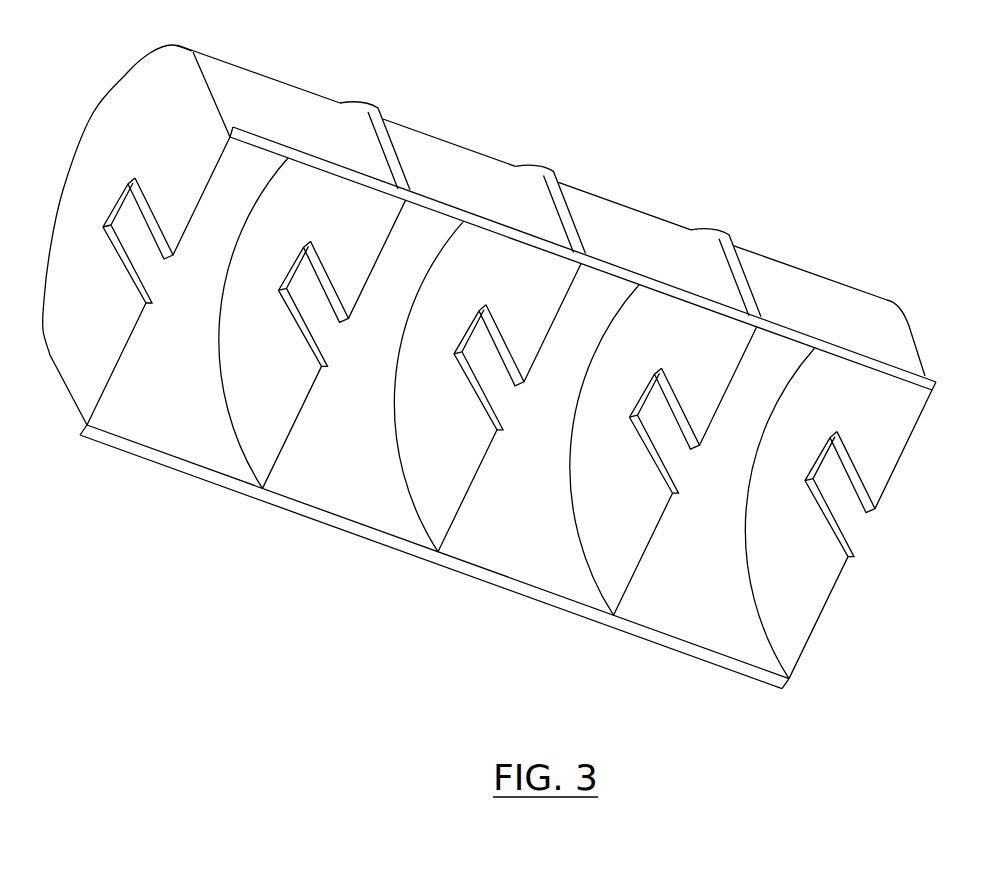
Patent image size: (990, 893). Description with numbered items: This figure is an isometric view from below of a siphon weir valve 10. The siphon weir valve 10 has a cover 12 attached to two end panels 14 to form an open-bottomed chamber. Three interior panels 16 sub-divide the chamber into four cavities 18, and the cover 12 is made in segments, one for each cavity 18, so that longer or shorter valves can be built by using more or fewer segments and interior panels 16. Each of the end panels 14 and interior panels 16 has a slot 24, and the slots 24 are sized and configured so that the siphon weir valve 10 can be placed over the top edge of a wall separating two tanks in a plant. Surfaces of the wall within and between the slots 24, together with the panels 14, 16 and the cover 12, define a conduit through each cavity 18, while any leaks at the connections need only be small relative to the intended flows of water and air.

The siphon weir valve 10 is at (858, 142).
The cover 12 is at (847, 287).
The end panel 14 is at (907, 447).
The interior panel 16 is at (630, 545).
The cavity 18 is at (515, 553).
The slot 24 is at (862, 533).